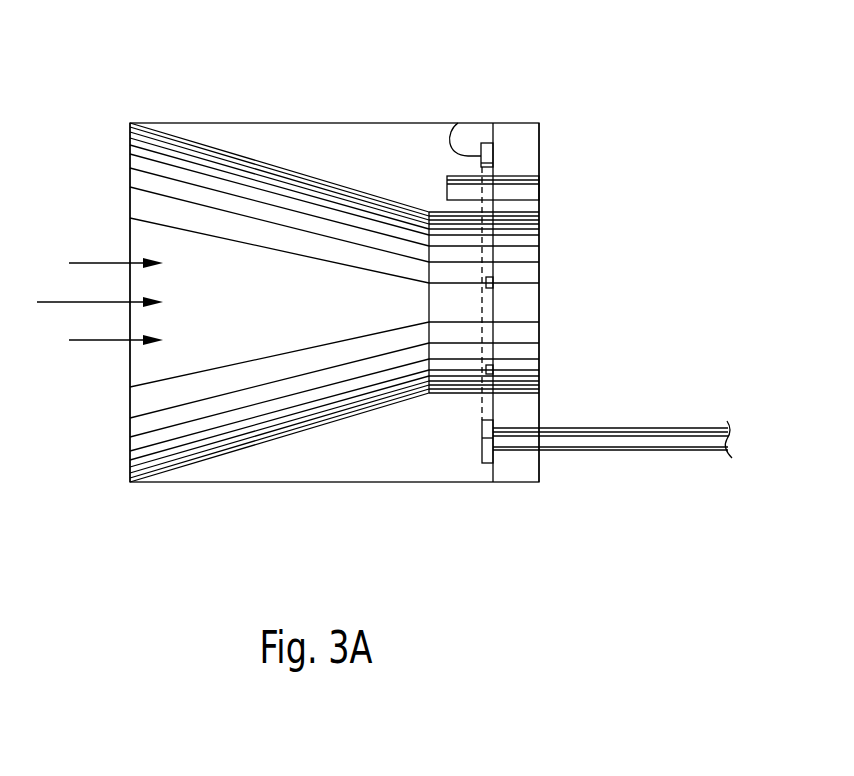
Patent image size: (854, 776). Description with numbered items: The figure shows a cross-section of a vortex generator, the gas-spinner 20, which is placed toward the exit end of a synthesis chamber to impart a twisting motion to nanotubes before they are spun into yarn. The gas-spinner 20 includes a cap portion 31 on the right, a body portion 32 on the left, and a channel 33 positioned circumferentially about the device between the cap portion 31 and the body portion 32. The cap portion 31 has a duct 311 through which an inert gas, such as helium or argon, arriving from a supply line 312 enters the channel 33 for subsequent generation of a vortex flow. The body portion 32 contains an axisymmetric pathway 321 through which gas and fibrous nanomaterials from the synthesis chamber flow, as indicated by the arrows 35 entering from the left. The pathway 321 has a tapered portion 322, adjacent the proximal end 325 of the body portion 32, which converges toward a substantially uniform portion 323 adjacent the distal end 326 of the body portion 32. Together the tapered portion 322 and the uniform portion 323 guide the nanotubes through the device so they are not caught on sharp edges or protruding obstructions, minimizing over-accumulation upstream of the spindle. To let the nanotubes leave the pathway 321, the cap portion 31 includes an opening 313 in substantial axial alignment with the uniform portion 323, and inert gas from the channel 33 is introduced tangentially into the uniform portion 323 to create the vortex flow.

The gas-spinner 20 is at (437, 68).
The cap portion 31 is at (529, 122).
The duct 311 is at (517, 452).
The supply line 312 is at (665, 427).
The opening 313 is at (537, 292).
The body portion 32 is at (227, 122).
The axisymmetric pathway 321 is at (255, 312).
The tapered portion 322 is at (297, 433).
The uniform portion 323 is at (447, 394).
The proximal end 325 is at (145, 122).
The distal end 326 is at (483, 483).
The channel 33 is at (458, 123).
The arrows 35 is at (86, 302).